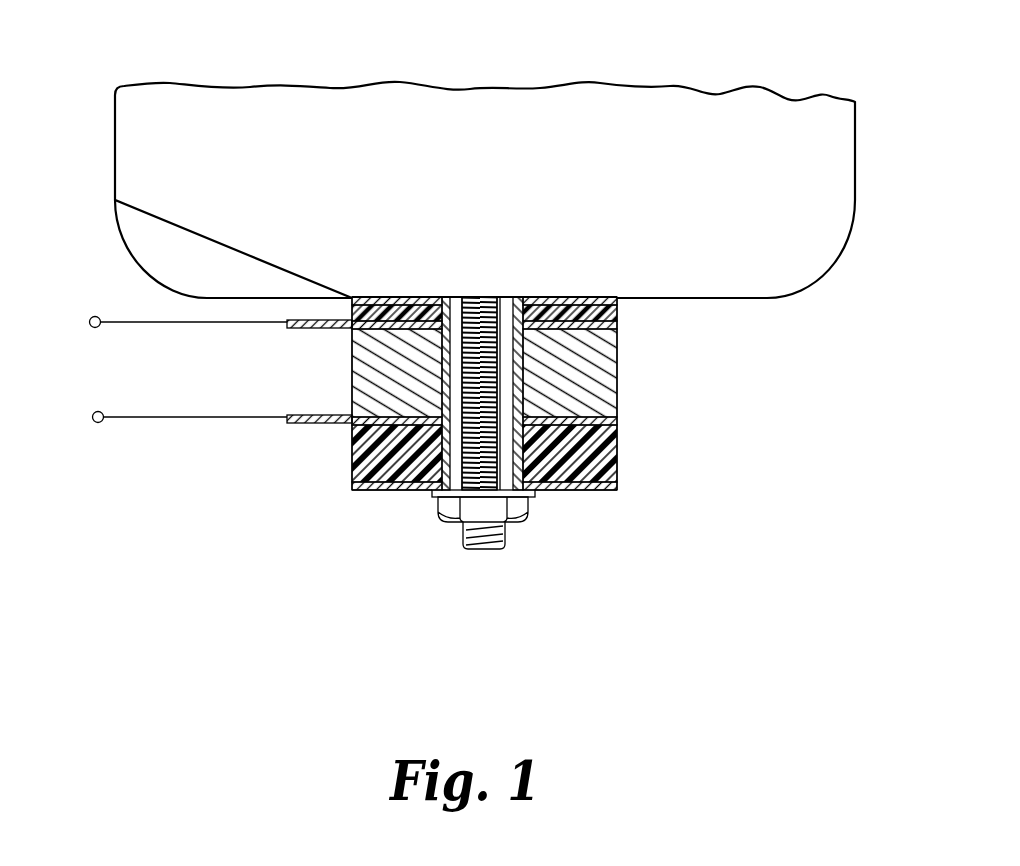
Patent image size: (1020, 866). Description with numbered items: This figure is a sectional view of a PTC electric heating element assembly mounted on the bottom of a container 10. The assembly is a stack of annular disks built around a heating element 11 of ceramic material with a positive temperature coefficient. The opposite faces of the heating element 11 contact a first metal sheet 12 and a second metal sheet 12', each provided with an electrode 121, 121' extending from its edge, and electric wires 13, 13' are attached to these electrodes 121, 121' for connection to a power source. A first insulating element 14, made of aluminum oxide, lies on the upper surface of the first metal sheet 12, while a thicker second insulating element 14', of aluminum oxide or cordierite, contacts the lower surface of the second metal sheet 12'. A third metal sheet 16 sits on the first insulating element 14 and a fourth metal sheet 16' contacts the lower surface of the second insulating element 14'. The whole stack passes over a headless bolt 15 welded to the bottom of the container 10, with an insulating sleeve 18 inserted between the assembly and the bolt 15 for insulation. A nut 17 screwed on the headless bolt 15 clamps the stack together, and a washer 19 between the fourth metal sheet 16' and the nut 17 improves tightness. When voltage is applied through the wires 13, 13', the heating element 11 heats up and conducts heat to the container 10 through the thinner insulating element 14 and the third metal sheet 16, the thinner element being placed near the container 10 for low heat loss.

The container 10 is at (575, 100).
The heating element 11 is at (605, 390).
The first metal sheet 12 is at (537, 371).
The second metal sheet 12' is at (537, 451).
The electric wire 13 is at (189, 347).
The electric wire 13' is at (190, 456).
The first insulating element 14 is at (537, 345).
The second insulating element 14' is at (539, 479).
The headless bolt 15 is at (503, 547).
The third metal sheet 16 is at (537, 324).
The fourth metal sheet 16' is at (539, 536).
The nut 17 is at (450, 512).
The insulating sleeve 18 is at (560, 490).
The washer 19 is at (432, 497).
The electrode 121 is at (298, 348).
The electrode 121' is at (289, 455).